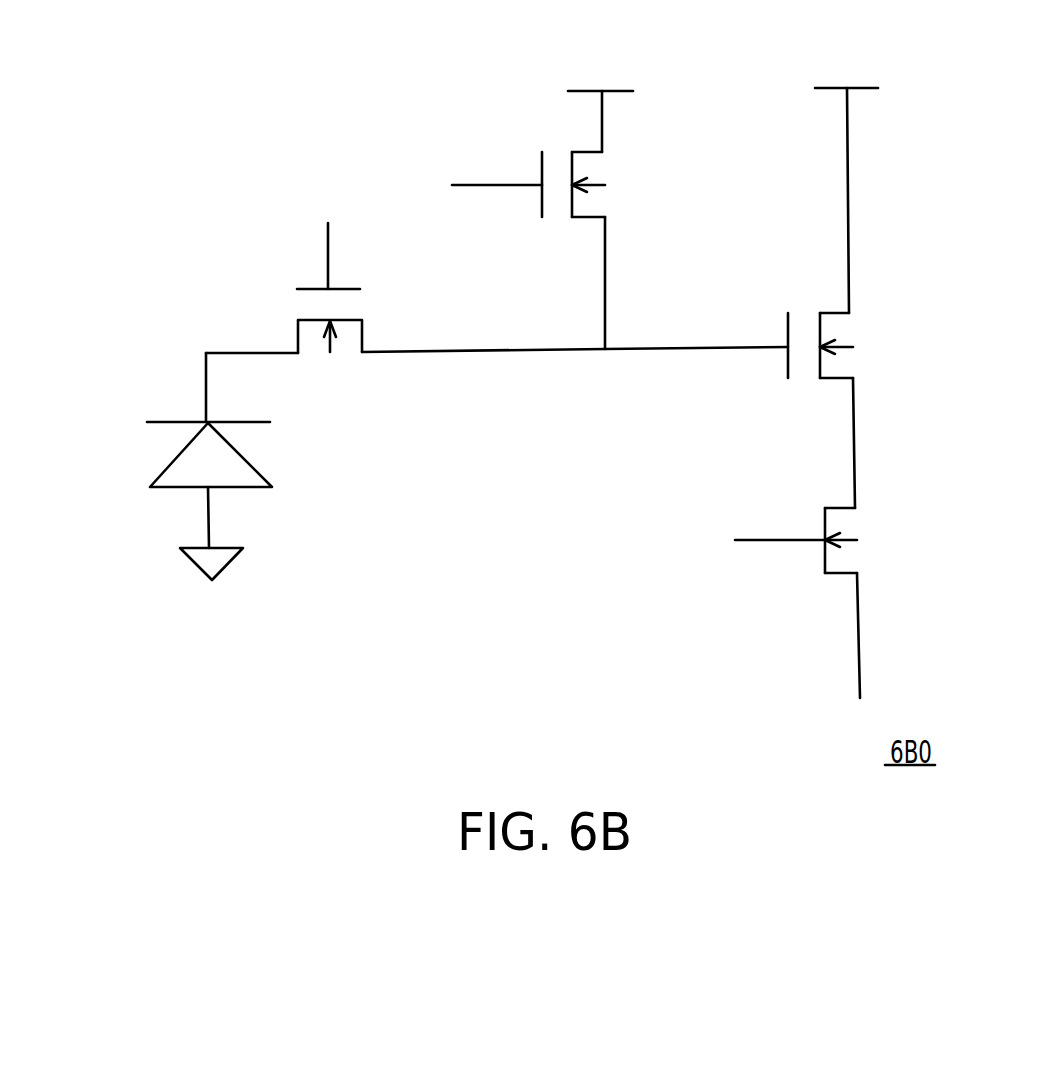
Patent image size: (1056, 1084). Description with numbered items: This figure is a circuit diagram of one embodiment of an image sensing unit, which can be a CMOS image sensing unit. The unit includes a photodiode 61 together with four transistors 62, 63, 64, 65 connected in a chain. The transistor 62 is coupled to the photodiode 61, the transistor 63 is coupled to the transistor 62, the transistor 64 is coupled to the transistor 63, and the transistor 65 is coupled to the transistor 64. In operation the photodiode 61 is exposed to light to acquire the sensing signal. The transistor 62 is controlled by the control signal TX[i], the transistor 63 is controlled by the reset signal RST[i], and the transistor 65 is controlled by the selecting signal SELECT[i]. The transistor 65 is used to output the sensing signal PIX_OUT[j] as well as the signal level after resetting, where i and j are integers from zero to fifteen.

The photodiode 61 is at (173, 462).
The transistor 62 is at (348, 367).
The transistor 63 is at (557, 225).
The transistor 64 is at (805, 312).
The transistor 65 is at (822, 587).